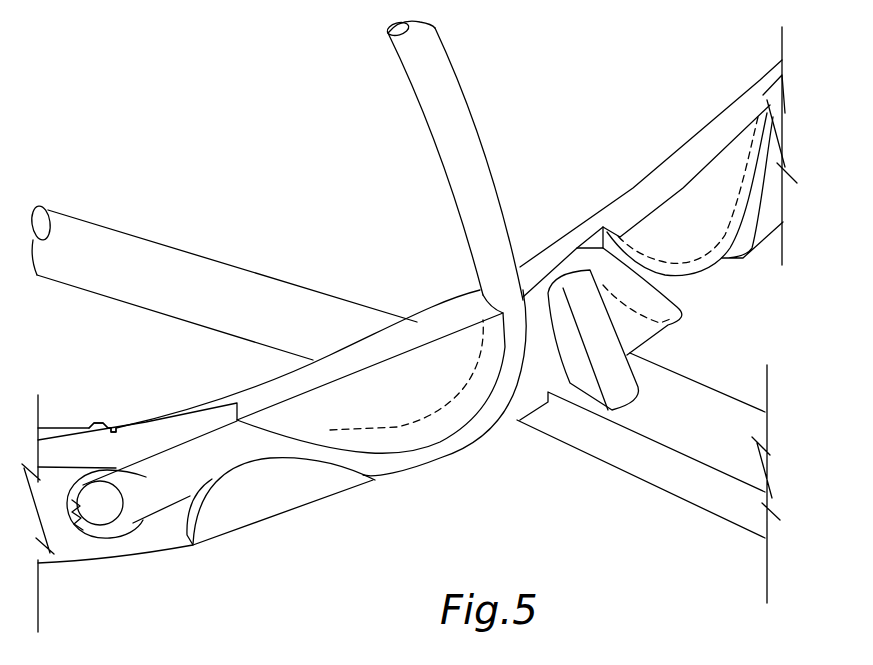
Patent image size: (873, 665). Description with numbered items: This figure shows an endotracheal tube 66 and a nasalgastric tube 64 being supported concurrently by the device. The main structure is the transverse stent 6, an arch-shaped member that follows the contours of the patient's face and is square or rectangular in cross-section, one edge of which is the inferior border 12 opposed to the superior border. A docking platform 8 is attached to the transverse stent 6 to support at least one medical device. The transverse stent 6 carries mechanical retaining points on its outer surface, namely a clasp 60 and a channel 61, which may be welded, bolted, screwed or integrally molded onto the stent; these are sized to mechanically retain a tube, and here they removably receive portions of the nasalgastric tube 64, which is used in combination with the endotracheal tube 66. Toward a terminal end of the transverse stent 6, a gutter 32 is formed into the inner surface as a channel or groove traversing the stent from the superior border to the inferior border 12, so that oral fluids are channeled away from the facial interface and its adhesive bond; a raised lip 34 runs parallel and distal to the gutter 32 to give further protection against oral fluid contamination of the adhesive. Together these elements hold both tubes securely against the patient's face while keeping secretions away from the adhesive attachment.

The transverse stent 6 is at (420, 399).
The docking platform 8 is at (723, 363).
The inferior border 12 is at (283, 495).
The gutter 32 is at (117, 425).
The raised lip 34 is at (98, 423).
The clasp 60 is at (67, 547).
The channel 61 is at (412, 468).
The nasalgastric tube 64 is at (433, 110).
The endotracheal tube 66 is at (168, 290).